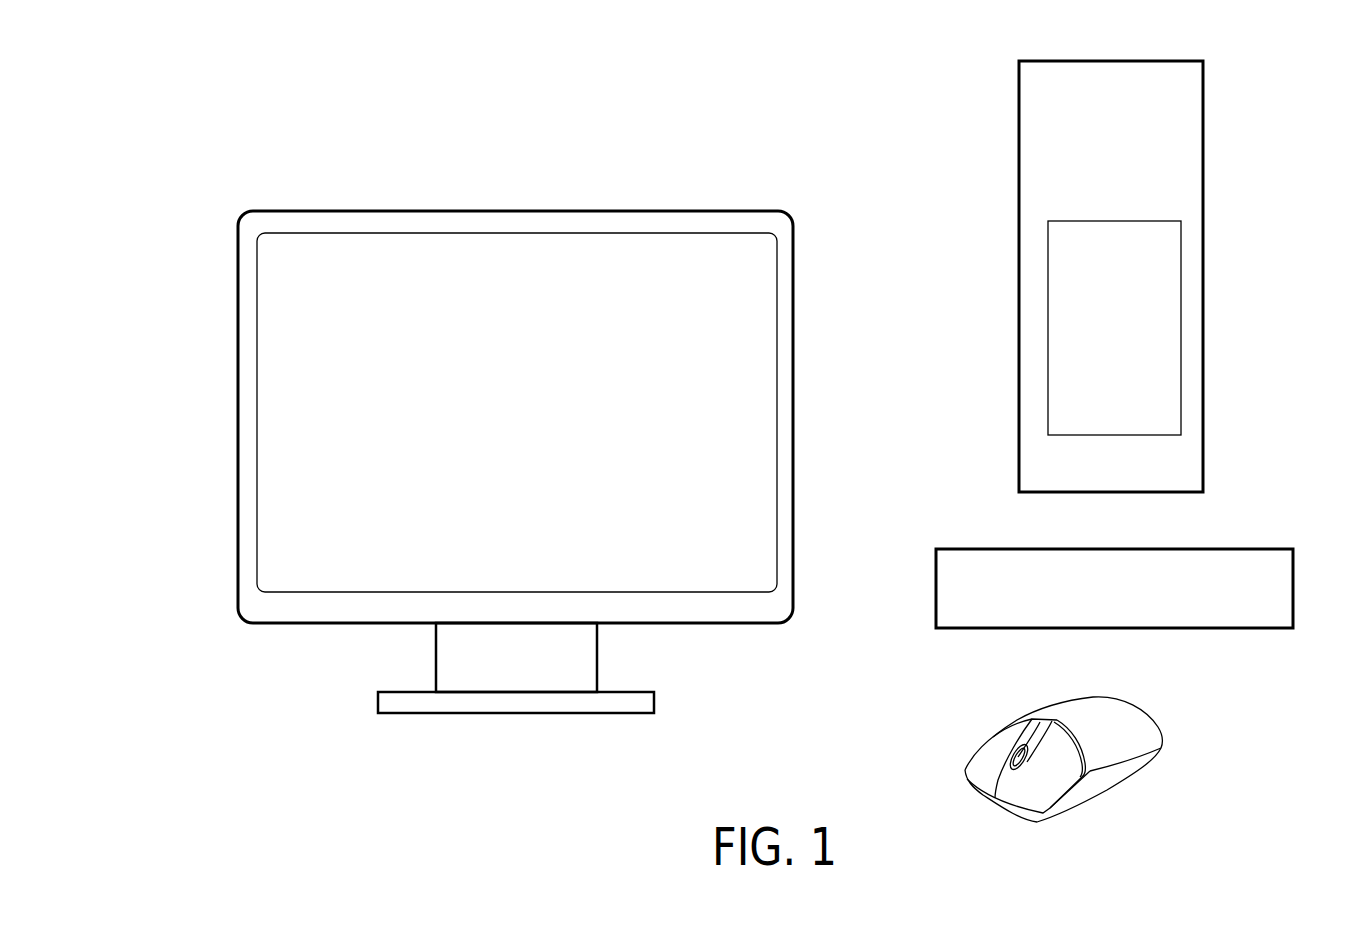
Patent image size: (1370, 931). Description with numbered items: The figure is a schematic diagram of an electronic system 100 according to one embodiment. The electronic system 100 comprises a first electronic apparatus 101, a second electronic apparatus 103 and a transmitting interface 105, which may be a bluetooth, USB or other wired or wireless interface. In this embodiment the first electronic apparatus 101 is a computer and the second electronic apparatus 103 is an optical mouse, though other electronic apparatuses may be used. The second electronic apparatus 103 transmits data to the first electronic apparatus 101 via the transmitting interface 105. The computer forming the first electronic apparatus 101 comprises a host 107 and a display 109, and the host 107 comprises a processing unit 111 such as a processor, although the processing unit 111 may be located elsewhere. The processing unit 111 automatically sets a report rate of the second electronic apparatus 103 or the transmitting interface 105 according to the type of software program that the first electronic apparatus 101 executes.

The electronic system 100 is at (953, 89).
The first electronic apparatus 101 is at (286, 84).
The second electronic apparatus 103 is at (1145, 718).
The transmitting interface 105 is at (1262, 549).
The host 107 is at (1173, 61).
The display 109 is at (692, 210).
The processing unit 111 is at (1161, 221).